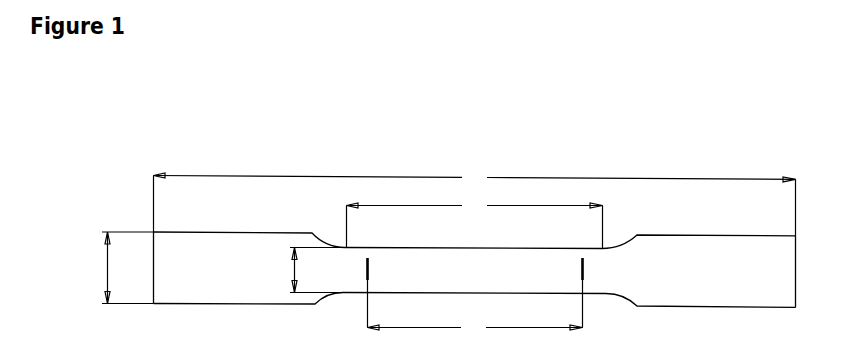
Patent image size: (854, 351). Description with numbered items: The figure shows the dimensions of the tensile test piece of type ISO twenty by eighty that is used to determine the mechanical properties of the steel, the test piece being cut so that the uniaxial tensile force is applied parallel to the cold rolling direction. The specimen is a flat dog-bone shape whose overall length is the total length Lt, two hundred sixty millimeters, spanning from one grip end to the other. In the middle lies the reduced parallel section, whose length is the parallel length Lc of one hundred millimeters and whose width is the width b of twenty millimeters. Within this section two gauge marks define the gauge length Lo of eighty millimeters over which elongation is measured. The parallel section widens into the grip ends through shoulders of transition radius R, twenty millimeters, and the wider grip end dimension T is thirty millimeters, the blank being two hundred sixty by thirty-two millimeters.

The total length Lt is at (475, 200).
The parallel length Lc is at (475, 220).
The gauge length Lo is at (475, 294).
The grip end dimension T is at (122, 268).
The width of parallel section b is at (313, 270).
The transition radius R is at (342, 323).